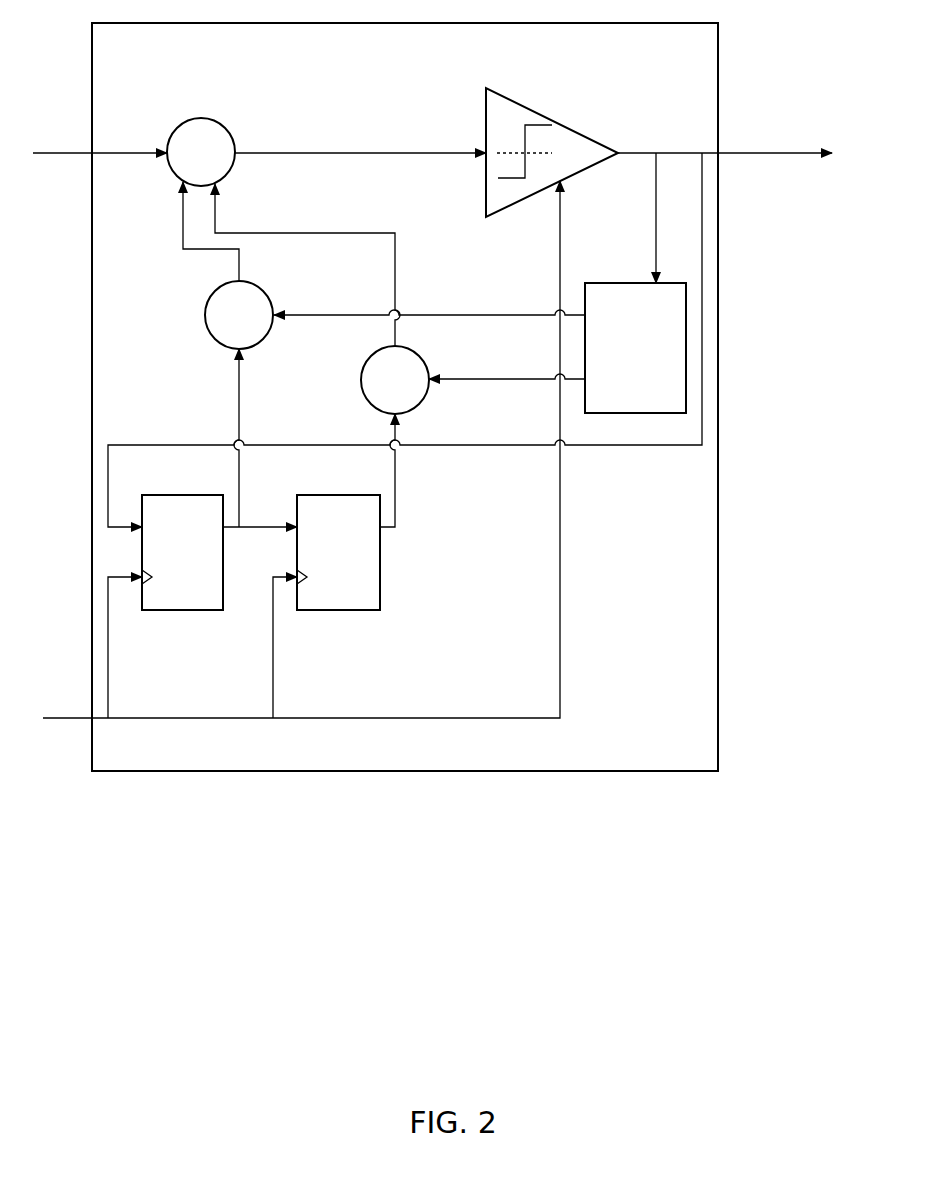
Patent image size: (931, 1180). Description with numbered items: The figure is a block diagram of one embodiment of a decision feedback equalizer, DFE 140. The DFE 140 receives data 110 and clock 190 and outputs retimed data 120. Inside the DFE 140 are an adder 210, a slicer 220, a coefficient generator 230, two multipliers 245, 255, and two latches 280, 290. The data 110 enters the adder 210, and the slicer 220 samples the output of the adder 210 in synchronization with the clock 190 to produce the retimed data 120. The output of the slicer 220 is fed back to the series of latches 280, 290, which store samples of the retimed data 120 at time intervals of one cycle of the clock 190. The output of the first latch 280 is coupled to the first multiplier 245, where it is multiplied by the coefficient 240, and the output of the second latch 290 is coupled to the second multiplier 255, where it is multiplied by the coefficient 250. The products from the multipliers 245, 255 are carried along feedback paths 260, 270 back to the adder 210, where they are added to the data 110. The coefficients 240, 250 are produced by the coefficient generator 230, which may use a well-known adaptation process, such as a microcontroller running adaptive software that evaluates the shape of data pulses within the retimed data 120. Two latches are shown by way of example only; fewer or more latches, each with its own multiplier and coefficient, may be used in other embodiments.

The DFE 140 is at (373, 49).
The data 110 is at (89, 140).
The retimed data 120 is at (748, 138).
The clock 190 is at (284, 449).
The adder 210 is at (217, 121).
The slicer 220 is at (527, 105).
The coefficient generator 230 is at (635, 283).
The coefficient 240 is at (457, 313).
The multiplier 245 is at (267, 292).
The coefficient 250 is at (457, 378).
The multiplier 255 is at (362, 389).
The first feedback line 260 is at (182, 234).
The second feedback line 270 is at (262, 232).
The latch 280 is at (405, 381).
The latch 290 is at (346, 512).